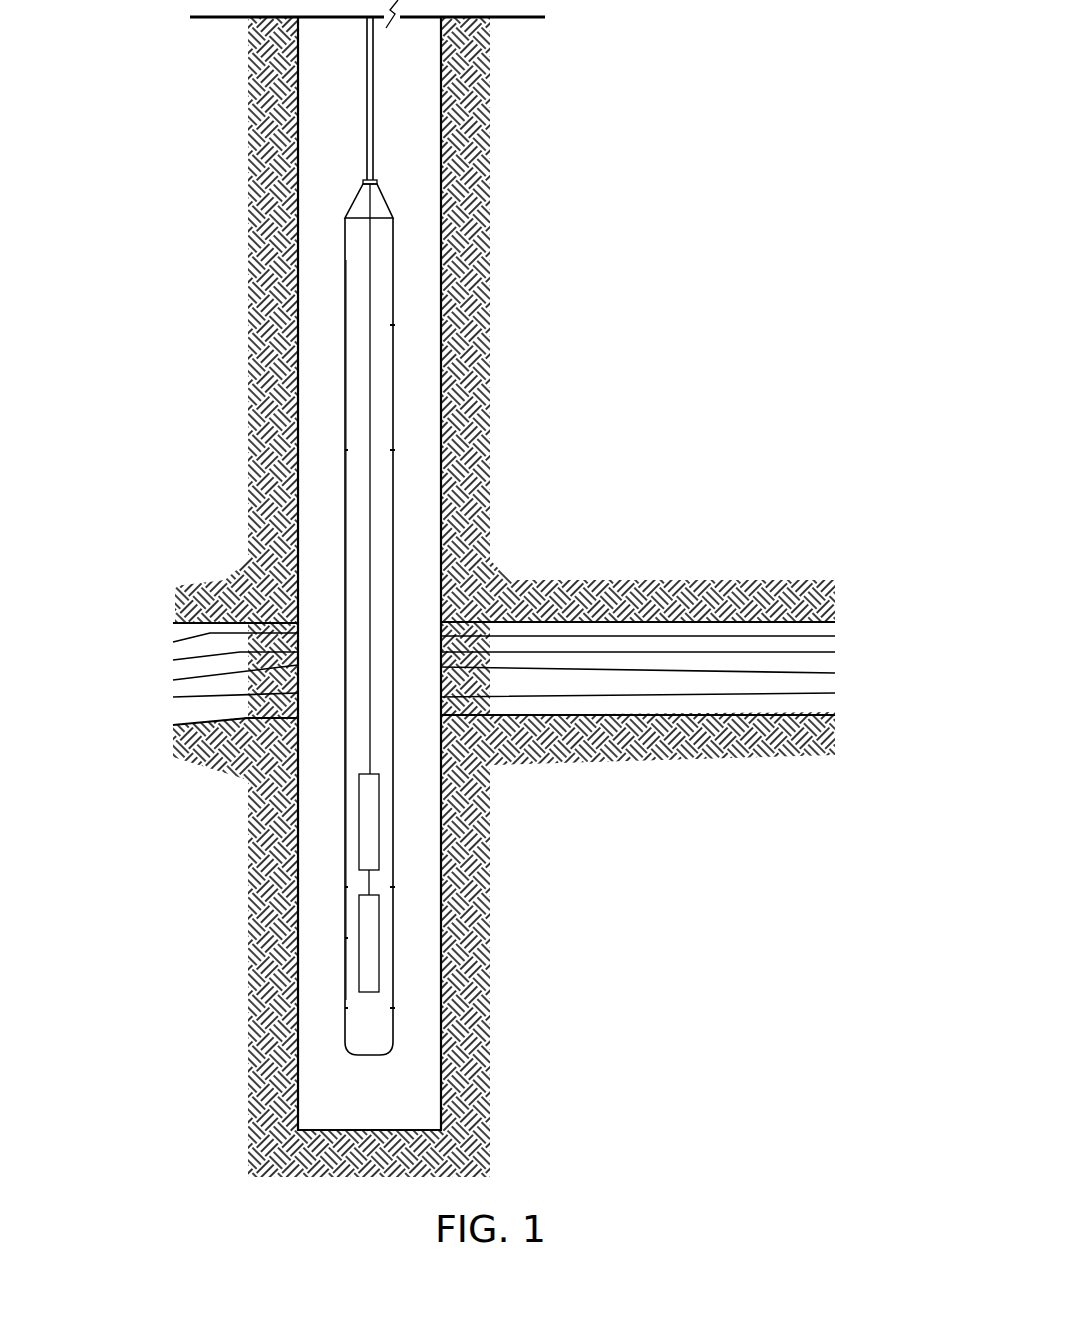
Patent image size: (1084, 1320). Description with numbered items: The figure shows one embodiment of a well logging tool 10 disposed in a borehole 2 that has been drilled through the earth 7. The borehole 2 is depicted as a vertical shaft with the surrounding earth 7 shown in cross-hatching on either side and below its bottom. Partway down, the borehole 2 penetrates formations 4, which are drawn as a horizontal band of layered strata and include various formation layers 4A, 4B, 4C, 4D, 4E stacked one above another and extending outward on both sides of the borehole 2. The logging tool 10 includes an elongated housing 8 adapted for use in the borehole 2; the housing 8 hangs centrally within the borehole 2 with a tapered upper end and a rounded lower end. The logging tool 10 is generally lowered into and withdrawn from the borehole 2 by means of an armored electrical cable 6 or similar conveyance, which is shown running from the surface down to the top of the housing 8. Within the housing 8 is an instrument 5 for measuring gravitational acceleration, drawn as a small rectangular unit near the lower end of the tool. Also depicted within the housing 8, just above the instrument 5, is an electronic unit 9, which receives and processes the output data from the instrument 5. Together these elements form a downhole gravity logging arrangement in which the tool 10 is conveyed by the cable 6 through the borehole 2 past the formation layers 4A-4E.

The borehole 2 is at (418, 92).
The formations 4 is at (502, 672).
The formation layer 4A is at (830, 622).
The formation layer 4B is at (838, 641).
The formation layer 4C is at (830, 661).
The formation layer 4D is at (830, 683).
The formation layer 4E is at (830, 703).
The instrument 5 is at (359, 914).
The armored electrical cable 6 is at (367, 102).
The earth 7 is at (468, 958).
The housing 8 is at (347, 432).
The electronic unit 9 is at (359, 828).
The well logging tool 10 is at (341, 619).